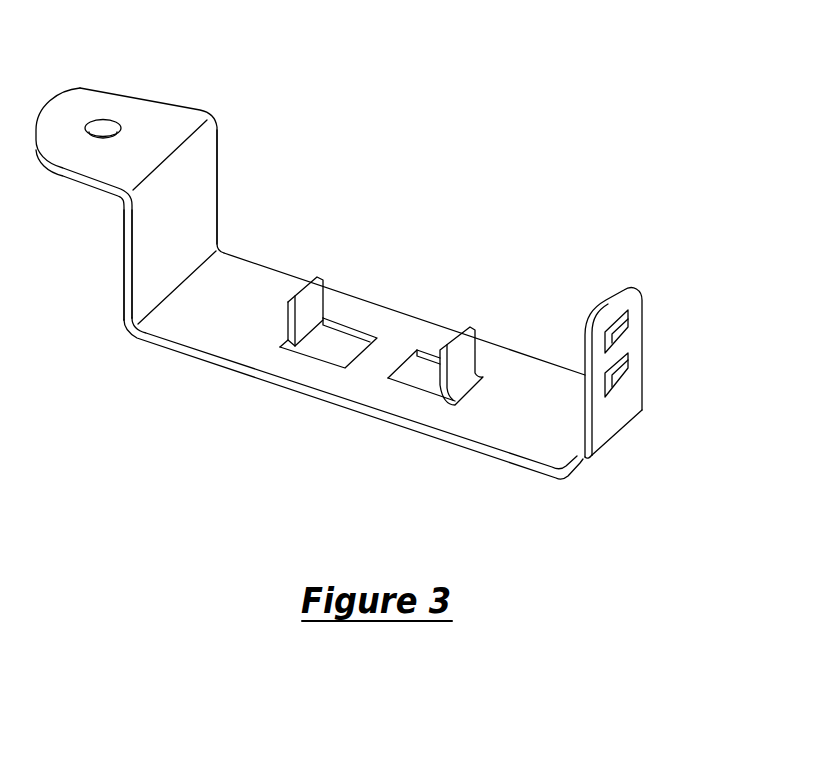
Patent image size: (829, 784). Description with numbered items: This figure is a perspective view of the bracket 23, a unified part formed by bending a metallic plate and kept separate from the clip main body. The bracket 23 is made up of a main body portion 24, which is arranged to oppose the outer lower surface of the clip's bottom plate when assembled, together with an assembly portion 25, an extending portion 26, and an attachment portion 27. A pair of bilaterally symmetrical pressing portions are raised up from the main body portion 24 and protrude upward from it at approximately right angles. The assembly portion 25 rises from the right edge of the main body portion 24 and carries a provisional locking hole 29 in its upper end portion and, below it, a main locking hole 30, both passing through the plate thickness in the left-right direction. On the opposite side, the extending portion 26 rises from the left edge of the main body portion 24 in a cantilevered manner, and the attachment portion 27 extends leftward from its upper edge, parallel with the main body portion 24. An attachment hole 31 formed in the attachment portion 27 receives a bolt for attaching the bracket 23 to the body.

The bracket 23 is at (378, 246).
The main body portion 24 is at (354, 354).
The assembly portion 25 is at (652, 339).
The extending portion 26 is at (190, 177).
The attachment portion 27 is at (126, 167).
The provisional locking hole 29 is at (620, 334).
The main locking hole 30 is at (620, 375).
The attachment hole 31 is at (99, 136).